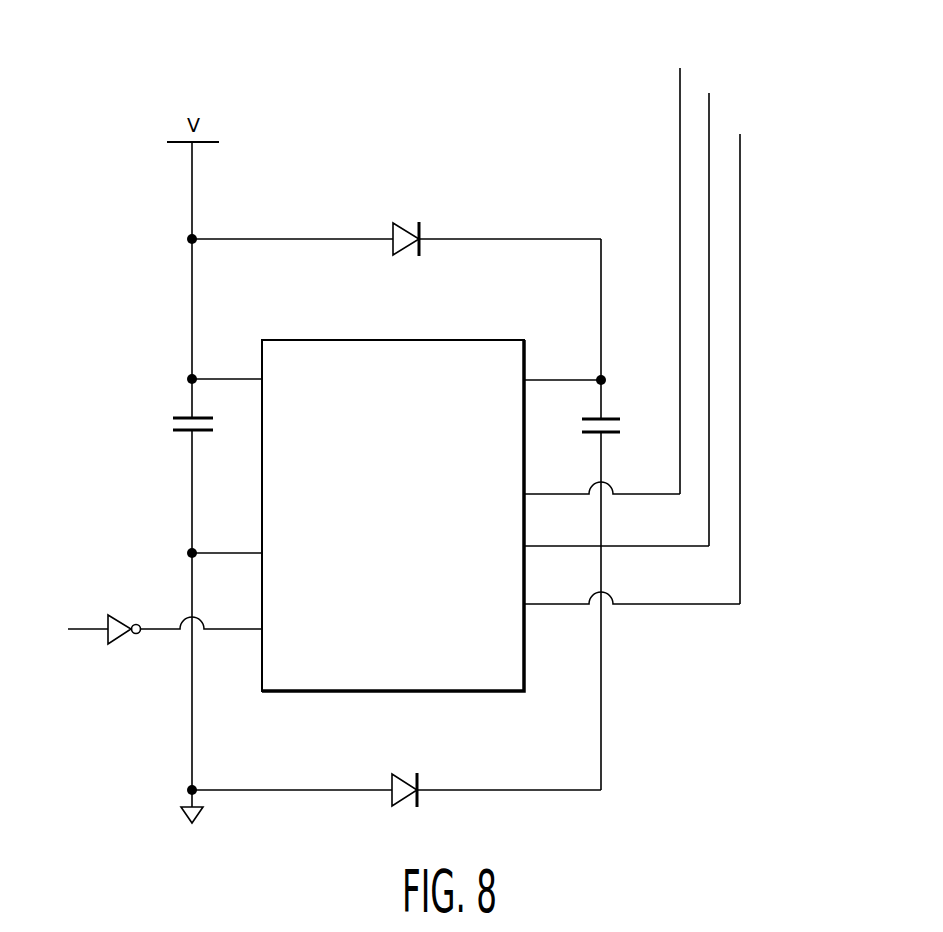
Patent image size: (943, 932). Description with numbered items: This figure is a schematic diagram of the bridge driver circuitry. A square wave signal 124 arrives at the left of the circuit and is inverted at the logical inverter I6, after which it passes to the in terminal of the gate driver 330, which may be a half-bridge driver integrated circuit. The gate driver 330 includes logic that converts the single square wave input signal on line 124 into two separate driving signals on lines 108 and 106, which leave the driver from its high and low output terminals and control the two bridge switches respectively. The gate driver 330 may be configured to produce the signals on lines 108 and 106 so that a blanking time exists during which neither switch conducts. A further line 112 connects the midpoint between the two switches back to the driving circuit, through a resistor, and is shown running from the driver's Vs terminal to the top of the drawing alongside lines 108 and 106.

The signal 124 is at (90, 622).
The logical inverter I6 is at (122, 644).
The gate driver 330 is at (295, 693).
The driving signal line 108 is at (680, 222).
The line 112 is at (710, 118).
The driving signal line 106 is at (740, 213).